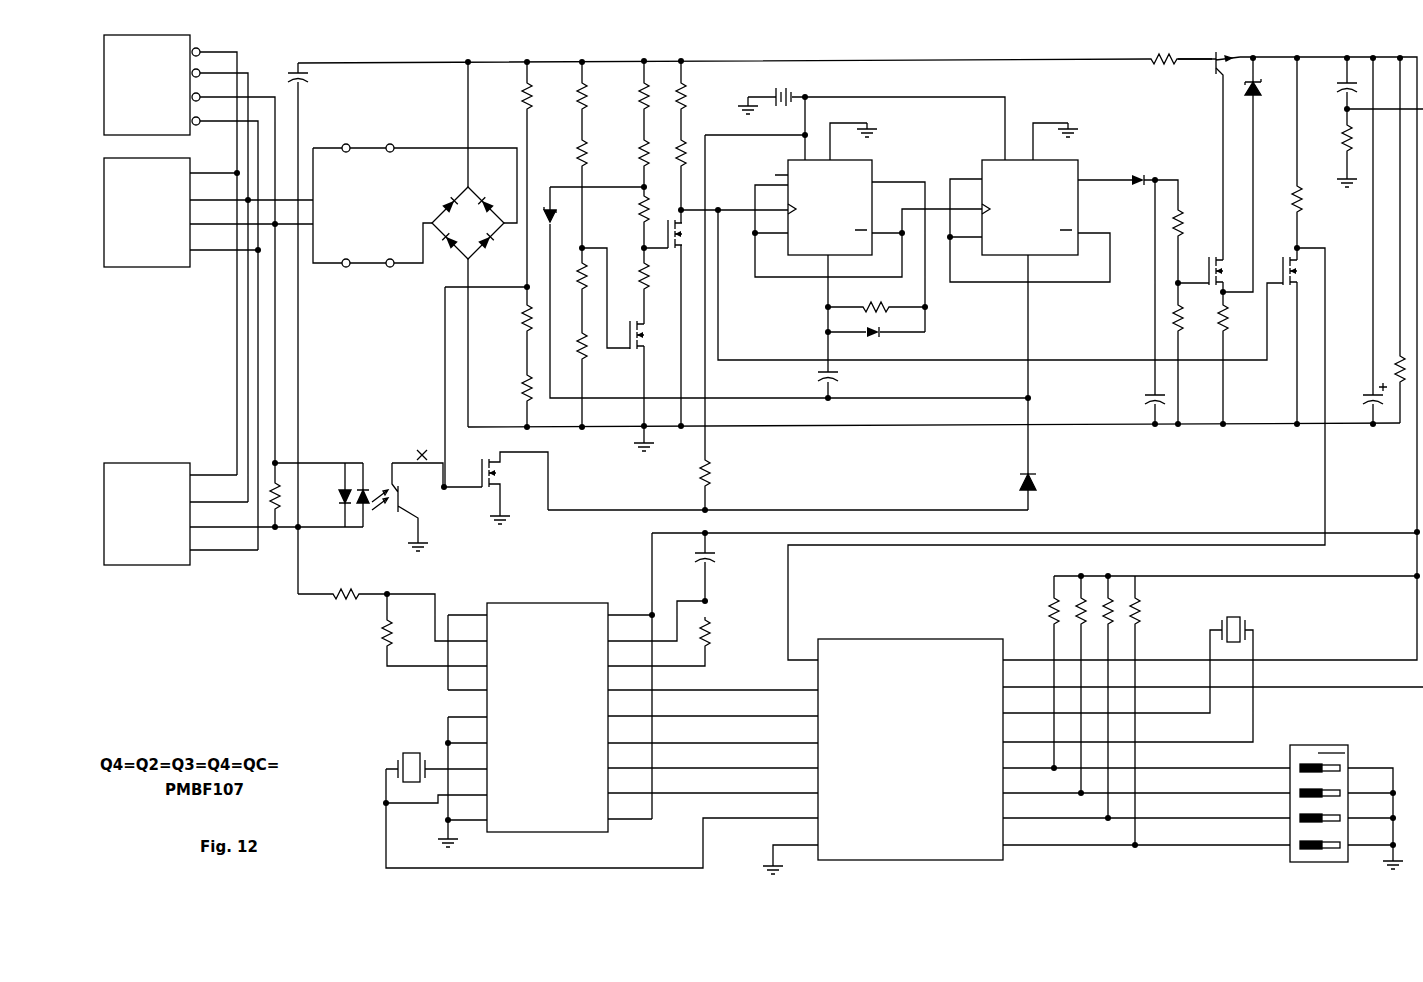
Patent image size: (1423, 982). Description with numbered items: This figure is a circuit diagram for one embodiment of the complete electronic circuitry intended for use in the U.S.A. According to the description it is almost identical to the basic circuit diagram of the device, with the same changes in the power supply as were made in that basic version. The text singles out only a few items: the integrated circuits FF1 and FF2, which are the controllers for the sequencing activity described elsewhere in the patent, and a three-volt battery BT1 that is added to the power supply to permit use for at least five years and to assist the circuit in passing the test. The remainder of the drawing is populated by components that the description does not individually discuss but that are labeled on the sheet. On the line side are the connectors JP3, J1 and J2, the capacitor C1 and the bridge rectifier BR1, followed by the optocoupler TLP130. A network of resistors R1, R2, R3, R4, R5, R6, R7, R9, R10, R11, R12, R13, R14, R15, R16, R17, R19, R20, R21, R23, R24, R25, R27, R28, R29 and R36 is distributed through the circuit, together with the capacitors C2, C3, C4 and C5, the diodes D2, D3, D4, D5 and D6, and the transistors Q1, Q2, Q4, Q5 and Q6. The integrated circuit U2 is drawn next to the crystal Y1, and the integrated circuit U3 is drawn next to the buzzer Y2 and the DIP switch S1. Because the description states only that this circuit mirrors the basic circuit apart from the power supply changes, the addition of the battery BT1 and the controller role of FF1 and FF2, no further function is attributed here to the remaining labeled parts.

The jumper connector JP3 is at (152, 74).
The line connector J1 is at (159, 202).
The line connector J2 is at (159, 503).
The capacitor 1.5nF C1 is at (321, 84).
The bridge rectifier BR1 is at (423, 205).
The resistor 20M R1 is at (511, 95).
The resistor 10M R2 is at (511, 317).
The resistor R3 is at (574, 241).
The resistor 20M R4 is at (566, 95).
The resistor 20M R5 is at (566, 152).
The resistor 10M R6 is at (566, 280).
The resistor 2.4M R7 is at (602, 359).
The resistor 20M R9 is at (627, 152).
The resistor 2.2M R10 is at (626, 210).
The resistor 1.5M R11 is at (627, 278).
The resistor 20M R12 is at (700, 95).
The resistor 20M R13 is at (667, 160).
The resistor 2M R14 is at (723, 473).
The resistor 3.6M R15 is at (877, 299).
The resistor 1K R16 is at (1163, 57).
The resistor 150K R17 is at (1199, 225).
The resistor 10K R19 is at (1219, 321).
The resistor 47K R20 is at (1281, 202).
The resistor 1.5M R21 is at (1327, 145).
The resistor R23 is at (868, 498).
The resistor 100K R24 is at (409, 636).
The resistor 750K R25 is at (727, 637).
The resistor 300K R27 is at (1077, 597).
The resistor R28 is at (1140, 570).
The resistor 300K R29 is at (1157, 615).
The resistor 300K R36 is at (1031, 607).
The zener diode 3.6V D2 is at (566, 216).
The diode 1MC14B D3 is at (901, 340).
The diode 1N4148 D4 is at (1063, 485).
The diode 1N4148 D5 is at (1117, 184).
The zener diode 1N750A D6 is at (1260, 61).
The MOSFET Q1 is at (652, 335).
The MOSFET Q2 is at (945, 252).
The MOSFET Q4 is at (1284, 282).
The transistor MPSA92 Q5 is at (1196, 93).
The MOSFET Q6 is at (508, 473).
The battery 3V BT1 is at (799, 88).
The integrated circuit FF1 is at (841, 199).
The integrated circuit FF2 is at (1035, 221).
The capacitor 0.2MF C2 is at (847, 380).
The capacitor C3 is at (1223, 244).
The capacitor 100uF C4 is at (1352, 378).
The capacitor 100nF C5 is at (732, 563).
The optocoupler TLP130 is at (370, 510).
The DTMF receiver UM-92870CM U2 is at (551, 722).
The controller BK1956 U3 is at (915, 750).
The crystal 3.579MHz Y1 is at (368, 757).
The buzzer Y2 is at (1271, 618).
The DIP switch S1 is at (1320, 805).